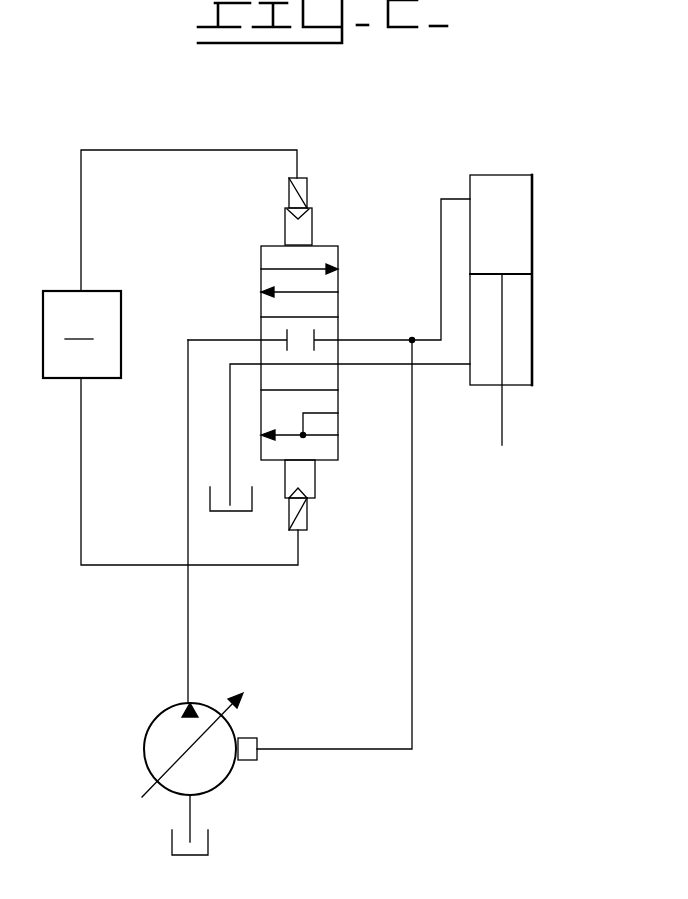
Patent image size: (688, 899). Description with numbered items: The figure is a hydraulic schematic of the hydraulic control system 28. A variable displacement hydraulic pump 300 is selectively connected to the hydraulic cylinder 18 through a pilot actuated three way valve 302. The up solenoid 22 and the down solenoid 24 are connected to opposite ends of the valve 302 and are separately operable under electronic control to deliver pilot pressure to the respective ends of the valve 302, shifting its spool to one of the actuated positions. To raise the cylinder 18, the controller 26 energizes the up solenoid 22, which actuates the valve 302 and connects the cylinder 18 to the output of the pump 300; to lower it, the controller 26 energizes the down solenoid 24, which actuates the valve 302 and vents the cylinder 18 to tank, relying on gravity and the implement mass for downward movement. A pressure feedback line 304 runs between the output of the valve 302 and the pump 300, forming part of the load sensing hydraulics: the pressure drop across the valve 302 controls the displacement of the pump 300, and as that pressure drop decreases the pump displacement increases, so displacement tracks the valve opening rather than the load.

The hydraulic cylinder 18 is at (533, 270).
The up solenoid 22 is at (308, 193).
The down solenoid 24 is at (310, 517).
The controller 26 is at (82, 334).
The hydraulic control system 28 is at (423, 142).
The variable displacement hydraulic pump 300 is at (210, 700).
The pilot actuated three way valve 302 is at (353, 279).
The pressure feedback line 304 is at (412, 537).